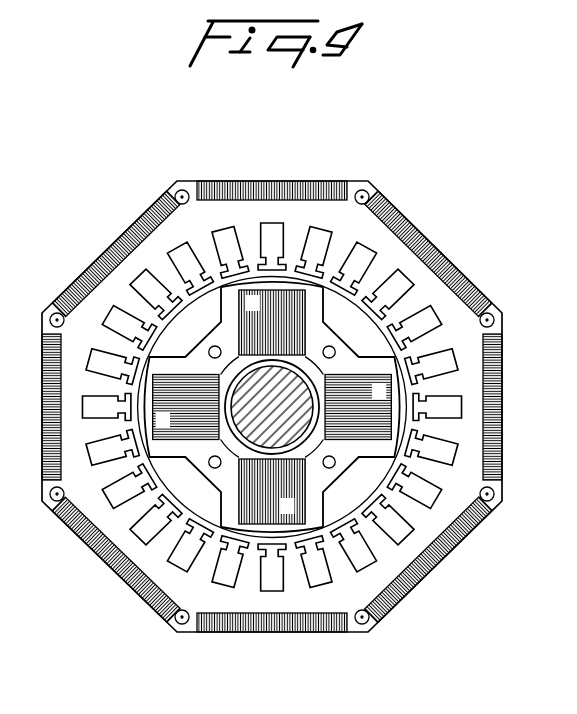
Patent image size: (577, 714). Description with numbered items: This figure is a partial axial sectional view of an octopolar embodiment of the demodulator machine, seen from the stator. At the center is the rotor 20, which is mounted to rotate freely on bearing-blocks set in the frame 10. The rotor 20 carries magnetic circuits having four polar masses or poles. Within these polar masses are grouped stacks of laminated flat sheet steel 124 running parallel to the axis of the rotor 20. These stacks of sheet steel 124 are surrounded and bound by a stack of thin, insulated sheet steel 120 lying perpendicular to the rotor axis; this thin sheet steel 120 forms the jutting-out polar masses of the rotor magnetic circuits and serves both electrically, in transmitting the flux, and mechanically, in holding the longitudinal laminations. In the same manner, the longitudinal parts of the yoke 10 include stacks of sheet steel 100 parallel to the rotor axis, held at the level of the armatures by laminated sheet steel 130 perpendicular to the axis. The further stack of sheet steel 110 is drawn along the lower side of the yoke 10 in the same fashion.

The frame 10 is at (503, 373).
The stacks of sheet steel 100 is at (273, 188).
The permanent magnet (bottom) 110 is at (273, 627).
The laminated sheet steel 130 is at (355, 230).
The stack of thin insulated sheet steel 120 is at (315, 308).
The stacks of laminated flat sheet steel 124 is at (287, 335).
The rotor 20 is at (253, 437).